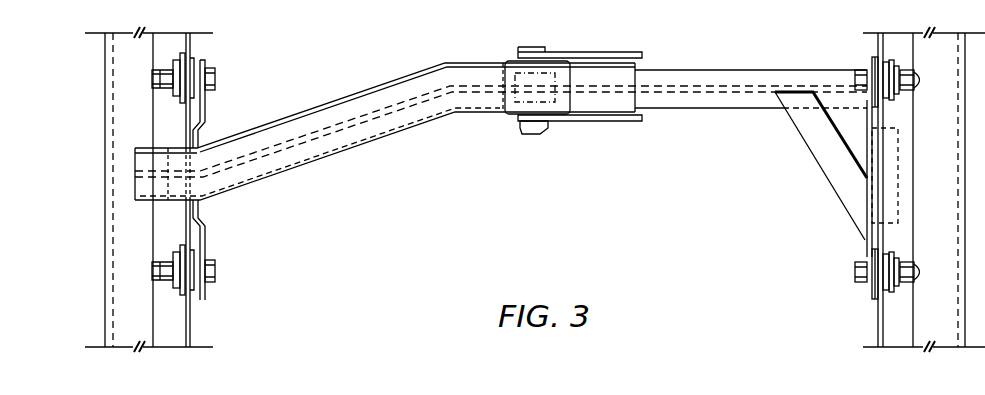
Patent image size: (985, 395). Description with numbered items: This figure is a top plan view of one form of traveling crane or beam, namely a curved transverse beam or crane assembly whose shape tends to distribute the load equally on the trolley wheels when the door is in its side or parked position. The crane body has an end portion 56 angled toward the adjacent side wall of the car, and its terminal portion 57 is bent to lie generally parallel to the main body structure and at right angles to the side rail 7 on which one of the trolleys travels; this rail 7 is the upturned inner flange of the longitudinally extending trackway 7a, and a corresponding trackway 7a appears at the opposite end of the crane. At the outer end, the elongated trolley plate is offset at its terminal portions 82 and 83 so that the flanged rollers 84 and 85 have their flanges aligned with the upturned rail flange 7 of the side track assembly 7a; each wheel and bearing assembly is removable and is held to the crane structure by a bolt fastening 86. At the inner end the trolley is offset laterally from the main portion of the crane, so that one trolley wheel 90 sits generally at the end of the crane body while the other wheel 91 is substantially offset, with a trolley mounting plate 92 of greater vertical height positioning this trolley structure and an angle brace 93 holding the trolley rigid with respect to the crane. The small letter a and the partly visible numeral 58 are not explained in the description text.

The side rail 7 is at (192, 326).
The longitudinally extending trackway 7a is at (141, 128).
The end portion 56 is at (392, 148).
The terminal portion 57 is at (152, 205).
The member 58 is at (980, 246).
The terminal portion of elongated plate 82 is at (208, 103).
The terminal portion of elongated plate 83 is at (208, 235).
The flanged roller 84 is at (198, 57).
The flanged roller 85 is at (198, 295).
The bolt fastening 86 is at (218, 78).
The trolley wheel 90 is at (872, 62).
The trolley wheel 91 is at (876, 301).
The trolley mounting plate 92 is at (866, 206).
The angle brace 93 is at (836, 168).
The clamp tab a is at (534, 127).